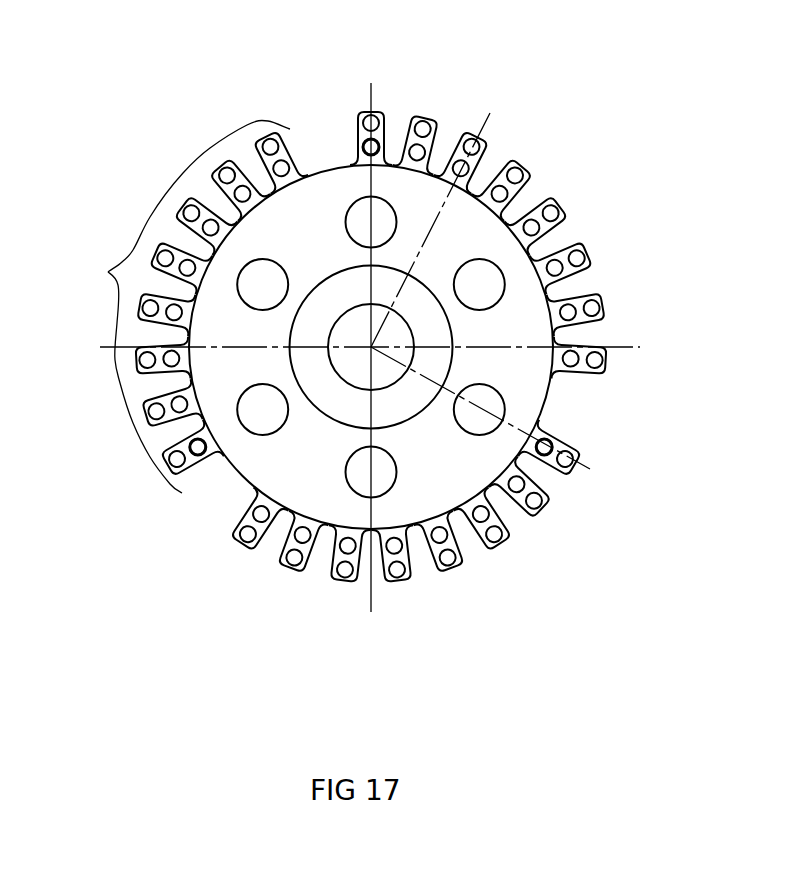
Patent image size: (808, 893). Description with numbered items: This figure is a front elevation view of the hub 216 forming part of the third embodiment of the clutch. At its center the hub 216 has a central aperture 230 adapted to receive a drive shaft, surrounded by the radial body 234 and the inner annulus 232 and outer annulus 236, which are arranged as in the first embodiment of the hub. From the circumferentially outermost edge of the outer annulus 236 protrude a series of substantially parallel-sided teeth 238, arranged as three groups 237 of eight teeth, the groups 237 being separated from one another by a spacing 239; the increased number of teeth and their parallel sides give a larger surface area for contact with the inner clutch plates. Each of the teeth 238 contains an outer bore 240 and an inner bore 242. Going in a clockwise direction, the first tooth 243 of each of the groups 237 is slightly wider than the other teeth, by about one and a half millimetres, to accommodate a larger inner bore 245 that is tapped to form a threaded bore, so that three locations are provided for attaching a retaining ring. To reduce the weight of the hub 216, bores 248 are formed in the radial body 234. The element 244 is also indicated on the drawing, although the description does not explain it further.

The hub 216 is at (578, 416).
The central aperture 230 is at (371, 347).
The inner annulus 232 is at (503, 270).
The radial body 234 is at (315, 483).
The outer annulus 236 is at (497, 483).
The groups of teeth 237 is at (169, 306).
The teeth 238 is at (500, 250).
The spacing 239 is at (330, 167).
The outer bore 240 is at (540, 513).
The inner bore 242 is at (563, 488).
The first tooth 243 is at (170, 458).
The tab 244 is at (587, 342).
The inner bore of the first tooth 245 is at (200, 452).
The bores 248 is at (480, 283).